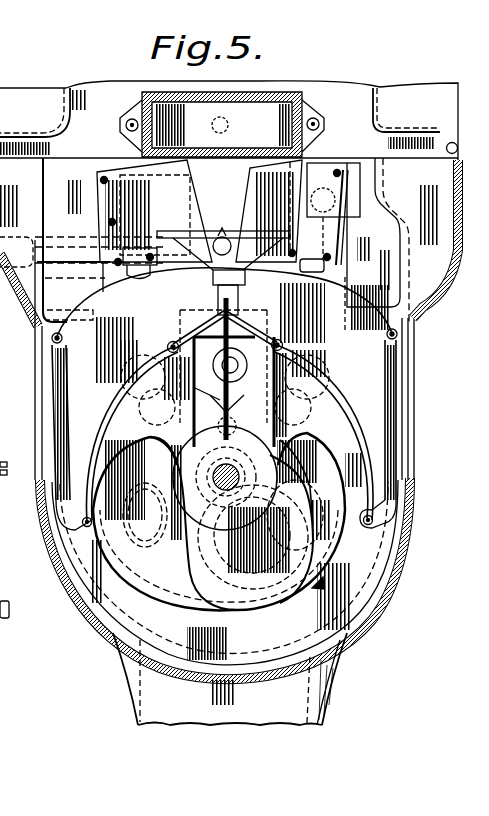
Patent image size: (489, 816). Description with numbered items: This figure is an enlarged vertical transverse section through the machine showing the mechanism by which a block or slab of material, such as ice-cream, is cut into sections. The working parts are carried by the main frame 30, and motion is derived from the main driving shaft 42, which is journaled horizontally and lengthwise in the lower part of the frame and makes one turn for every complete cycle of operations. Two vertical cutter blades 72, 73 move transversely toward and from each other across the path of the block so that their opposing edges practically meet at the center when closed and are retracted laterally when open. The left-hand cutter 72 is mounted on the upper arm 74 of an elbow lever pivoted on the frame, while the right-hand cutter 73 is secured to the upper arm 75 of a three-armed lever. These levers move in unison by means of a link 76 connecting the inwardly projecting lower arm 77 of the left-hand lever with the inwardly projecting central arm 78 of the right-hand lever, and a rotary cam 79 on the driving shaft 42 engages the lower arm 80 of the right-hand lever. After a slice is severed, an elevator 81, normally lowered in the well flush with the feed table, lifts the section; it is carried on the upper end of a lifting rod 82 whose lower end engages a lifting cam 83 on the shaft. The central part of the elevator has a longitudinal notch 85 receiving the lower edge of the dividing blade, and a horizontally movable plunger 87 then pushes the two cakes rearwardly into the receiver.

The main frame 30 is at (125, 637).
The main driving shaft 42 is at (230, 490).
The cutter blade 72 is at (154, 226).
The cutter blade 73 is at (269, 211).
The upper arm 74 is at (102, 279).
The upper arm 75 is at (335, 267).
The link 76 is at (220, 368).
The lower arm 77 is at (170, 341).
The central arm 78 is at (250, 393).
The rotary cam 79 is at (156, 588).
The lower arm 80 is at (317, 449).
The elevator 81 is at (264, 237).
The lifting rod 82 is at (239, 293).
The lifting cam 83 is at (218, 604).
The longitudinal notch 85 is at (222, 236).
The plunger 87 is at (222, 124).